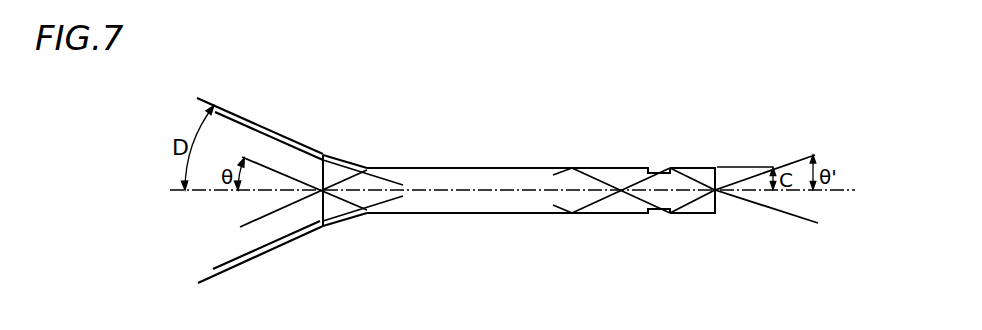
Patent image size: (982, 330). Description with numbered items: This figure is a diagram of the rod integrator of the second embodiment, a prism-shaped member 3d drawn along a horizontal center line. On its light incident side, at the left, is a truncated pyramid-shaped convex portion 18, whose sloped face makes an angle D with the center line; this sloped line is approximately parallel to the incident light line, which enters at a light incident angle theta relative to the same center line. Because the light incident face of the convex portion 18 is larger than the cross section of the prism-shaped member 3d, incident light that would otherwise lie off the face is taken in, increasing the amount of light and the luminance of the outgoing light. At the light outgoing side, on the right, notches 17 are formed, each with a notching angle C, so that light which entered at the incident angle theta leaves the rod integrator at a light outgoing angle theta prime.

The convex portion 18 is at (341, 158).
The light guide rod 3d is at (493, 165).
The notches 17 is at (650, 170).